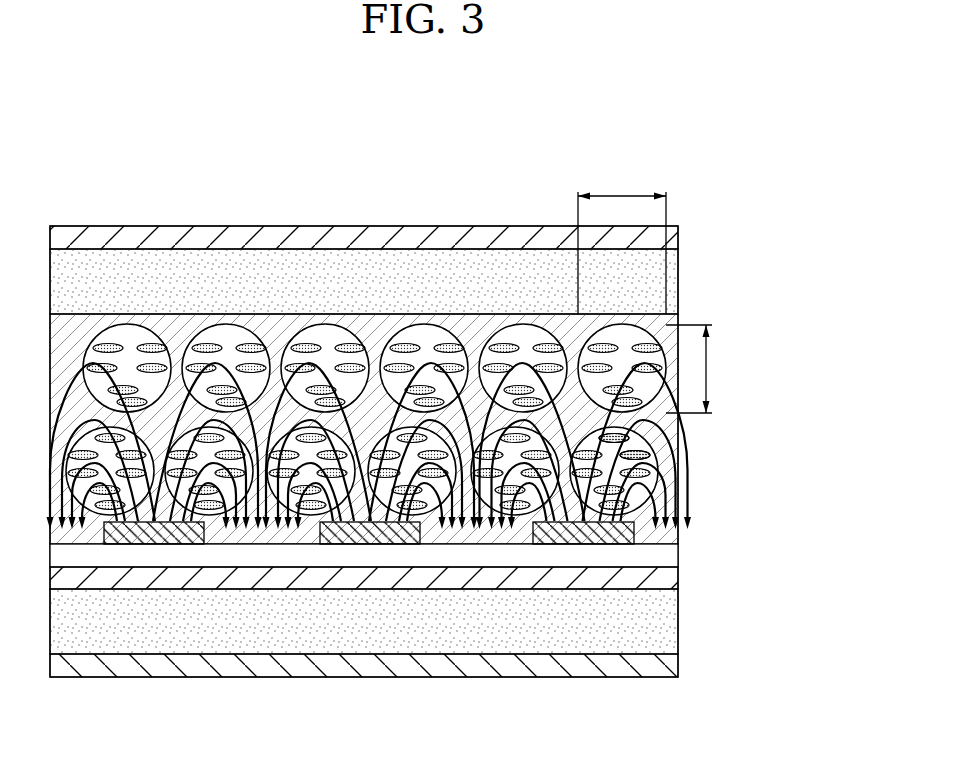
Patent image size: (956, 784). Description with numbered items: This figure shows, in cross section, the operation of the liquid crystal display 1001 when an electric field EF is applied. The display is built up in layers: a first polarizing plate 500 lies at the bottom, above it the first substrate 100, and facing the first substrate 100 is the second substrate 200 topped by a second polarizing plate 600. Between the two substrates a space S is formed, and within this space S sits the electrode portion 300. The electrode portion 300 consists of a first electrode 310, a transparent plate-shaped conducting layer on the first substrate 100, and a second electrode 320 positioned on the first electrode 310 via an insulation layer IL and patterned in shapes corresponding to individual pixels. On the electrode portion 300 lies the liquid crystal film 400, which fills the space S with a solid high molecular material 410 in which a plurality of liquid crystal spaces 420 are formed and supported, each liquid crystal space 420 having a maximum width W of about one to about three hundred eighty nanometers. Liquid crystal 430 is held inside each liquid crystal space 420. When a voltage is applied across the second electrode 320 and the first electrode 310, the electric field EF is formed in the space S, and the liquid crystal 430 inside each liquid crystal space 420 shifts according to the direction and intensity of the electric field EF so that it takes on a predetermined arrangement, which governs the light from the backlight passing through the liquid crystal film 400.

The liquid crystal display 1001 is at (390, 134).
The first substrate 100 is at (373, 632).
The second substrate 200 is at (190, 270).
The electrode portion 300 is at (364, 649).
The first electrode 310 is at (210, 579).
The second electrode 320 is at (149, 532).
The liquid crystal film 400 is at (425, 471).
The high molecular material 410 is at (672, 487).
The liquid crystal space 420 is at (640, 460).
The liquid crystal 430 is at (603, 442).
The first polarizing plate 500 is at (452, 665).
The second polarizing plate 600 is at (446, 237).
The space S is at (271, 333).
The insulation layer IL is at (550, 557).
The electric field EF is at (643, 513).
The maximum width W is at (656, 291).